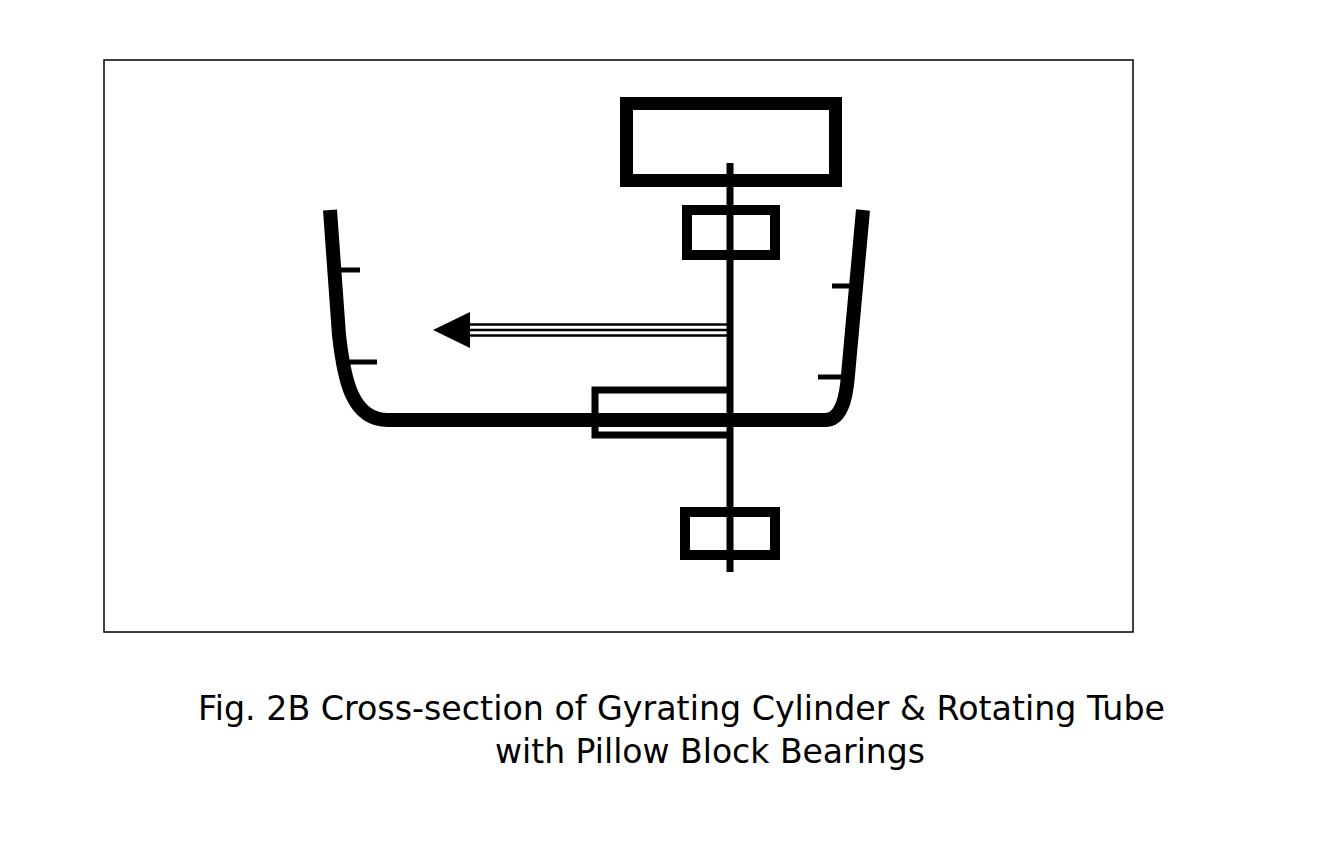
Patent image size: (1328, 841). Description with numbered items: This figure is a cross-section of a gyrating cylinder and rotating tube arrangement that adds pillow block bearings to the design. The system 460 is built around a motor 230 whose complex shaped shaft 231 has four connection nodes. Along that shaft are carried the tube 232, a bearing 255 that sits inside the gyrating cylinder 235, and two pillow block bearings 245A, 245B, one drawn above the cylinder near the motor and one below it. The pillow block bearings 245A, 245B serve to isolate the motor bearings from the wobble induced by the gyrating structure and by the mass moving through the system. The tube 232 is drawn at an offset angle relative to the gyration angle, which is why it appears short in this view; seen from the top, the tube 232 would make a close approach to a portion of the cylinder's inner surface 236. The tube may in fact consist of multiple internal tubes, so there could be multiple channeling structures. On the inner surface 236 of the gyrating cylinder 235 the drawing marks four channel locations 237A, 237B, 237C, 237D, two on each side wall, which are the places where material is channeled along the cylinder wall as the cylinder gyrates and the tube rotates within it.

The motor 230 is at (612, 152).
The complex shaped shaft 231 is at (716, 303).
The tube 232 is at (522, 314).
The gyrating cylinder 235 is at (357, 426).
The cylinder inner surface 236 is at (388, 402).
The channel location 237A is at (378, 362).
The channel location 237B is at (378, 270).
The channel location 237C is at (828, 286).
The channel location 237D is at (806, 377).
The pillow block bearing 245A is at (792, 210).
The pillow block bearing 245B is at (792, 540).
The bearing 255 is at (582, 436).
The system 460 is at (1150, 328).